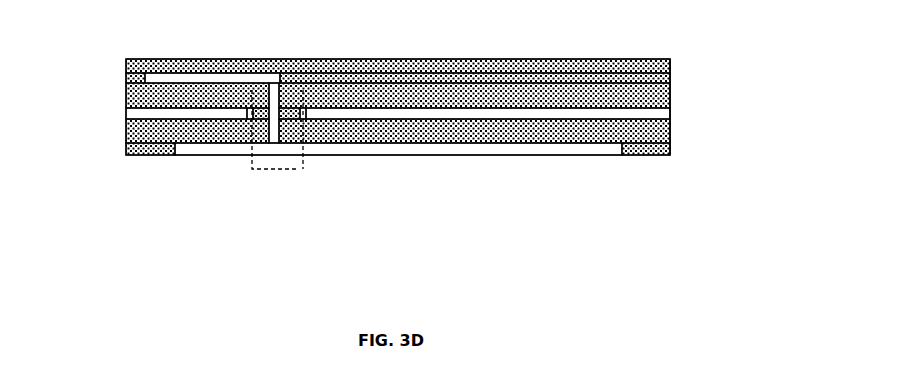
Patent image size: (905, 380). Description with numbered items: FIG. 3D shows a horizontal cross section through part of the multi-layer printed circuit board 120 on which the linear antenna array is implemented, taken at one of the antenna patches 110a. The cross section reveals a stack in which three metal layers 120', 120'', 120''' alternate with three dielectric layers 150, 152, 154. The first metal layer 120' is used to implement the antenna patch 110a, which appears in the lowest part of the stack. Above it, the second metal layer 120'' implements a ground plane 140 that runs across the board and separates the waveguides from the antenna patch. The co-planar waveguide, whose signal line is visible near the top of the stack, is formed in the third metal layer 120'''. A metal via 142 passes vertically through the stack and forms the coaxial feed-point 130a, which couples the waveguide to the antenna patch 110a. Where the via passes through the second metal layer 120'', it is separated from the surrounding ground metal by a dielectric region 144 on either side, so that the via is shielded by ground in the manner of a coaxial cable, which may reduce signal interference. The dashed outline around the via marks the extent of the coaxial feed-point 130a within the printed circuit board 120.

The multi-layer printed circuit board 120 is at (398, 157).
The first metal layer 120' is at (715, 142).
The second metal layer 120'' is at (720, 114).
The third metal layer 120''' is at (723, 83).
The dielectric layer 154 is at (126, 66).
The dielectric layer 152 is at (126, 95).
The dielectric layer 150 is at (126, 130).
The metal via 142 is at (280, 105).
The ground plane 140 is at (583, 113).
The dielectric region 144 is at (250, 116).
The coaxial feed-point 130a is at (294, 170).
The antenna patch 110a is at (575, 155).